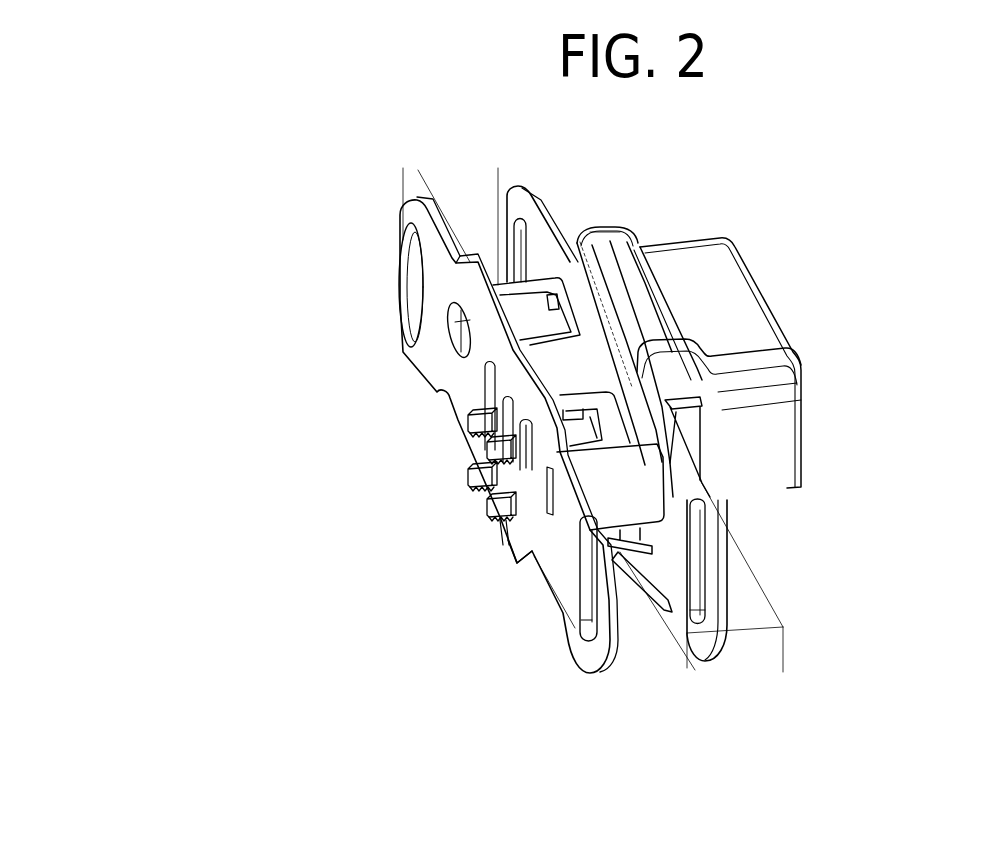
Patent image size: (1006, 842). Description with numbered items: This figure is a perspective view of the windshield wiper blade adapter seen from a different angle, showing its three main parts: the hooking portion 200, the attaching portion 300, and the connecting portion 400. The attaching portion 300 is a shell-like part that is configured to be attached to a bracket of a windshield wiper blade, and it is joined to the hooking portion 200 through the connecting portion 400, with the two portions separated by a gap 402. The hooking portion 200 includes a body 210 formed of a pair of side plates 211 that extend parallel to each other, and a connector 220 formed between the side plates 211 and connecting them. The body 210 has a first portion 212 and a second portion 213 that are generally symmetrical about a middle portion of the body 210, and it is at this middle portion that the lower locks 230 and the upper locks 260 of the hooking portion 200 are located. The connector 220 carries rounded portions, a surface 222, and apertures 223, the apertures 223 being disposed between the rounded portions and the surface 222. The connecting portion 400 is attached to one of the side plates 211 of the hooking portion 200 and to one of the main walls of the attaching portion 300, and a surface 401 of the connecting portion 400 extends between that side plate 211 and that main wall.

The hooking portion 200 is at (519, 557).
The body 210 is at (427, 400).
The side plates 211 is at (400, 232).
The first portion 212 is at (403, 325).
The second portion 213 is at (568, 641).
The connector 220 is at (635, 473).
The surface 222 is at (572, 362).
The apertures 223 is at (537, 320).
The lower locks 230 is at (492, 515).
The upper locks 260 is at (487, 460).
The attaching portion 300 is at (790, 318).
The connecting portion 400 is at (707, 382).
The surface 401 is at (627, 250).
The gap 402 is at (677, 408).